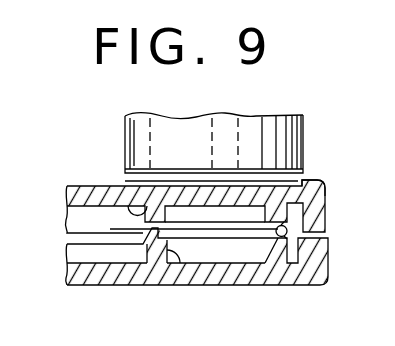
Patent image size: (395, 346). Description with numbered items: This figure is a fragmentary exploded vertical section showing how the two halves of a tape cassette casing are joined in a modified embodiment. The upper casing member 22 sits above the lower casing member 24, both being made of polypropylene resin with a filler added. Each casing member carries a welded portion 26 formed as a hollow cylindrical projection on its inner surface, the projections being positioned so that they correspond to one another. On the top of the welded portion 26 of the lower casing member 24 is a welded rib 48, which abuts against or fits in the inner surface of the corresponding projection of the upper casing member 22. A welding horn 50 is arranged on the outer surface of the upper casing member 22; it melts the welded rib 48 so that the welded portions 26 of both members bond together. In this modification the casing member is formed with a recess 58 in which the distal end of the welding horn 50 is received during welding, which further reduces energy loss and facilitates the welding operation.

The upper casing member 22 is at (103, 196).
The lower casing member 24 is at (118, 281).
The welded portion 26 is at (132, 212).
The welded rib 48 is at (288, 232).
The welding horn 50 is at (303, 147).
The recess 58 is at (297, 180).